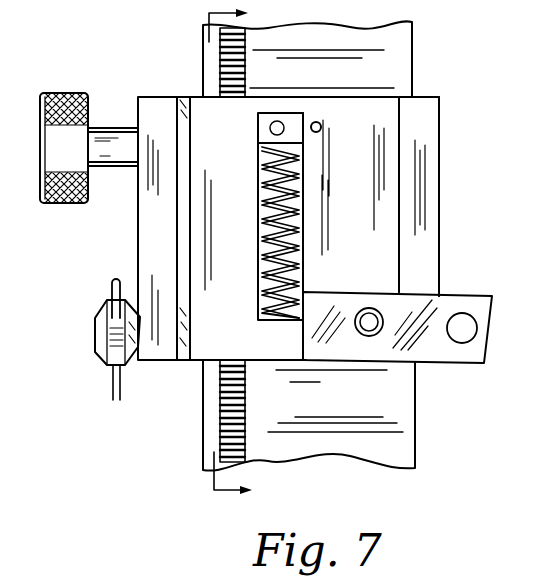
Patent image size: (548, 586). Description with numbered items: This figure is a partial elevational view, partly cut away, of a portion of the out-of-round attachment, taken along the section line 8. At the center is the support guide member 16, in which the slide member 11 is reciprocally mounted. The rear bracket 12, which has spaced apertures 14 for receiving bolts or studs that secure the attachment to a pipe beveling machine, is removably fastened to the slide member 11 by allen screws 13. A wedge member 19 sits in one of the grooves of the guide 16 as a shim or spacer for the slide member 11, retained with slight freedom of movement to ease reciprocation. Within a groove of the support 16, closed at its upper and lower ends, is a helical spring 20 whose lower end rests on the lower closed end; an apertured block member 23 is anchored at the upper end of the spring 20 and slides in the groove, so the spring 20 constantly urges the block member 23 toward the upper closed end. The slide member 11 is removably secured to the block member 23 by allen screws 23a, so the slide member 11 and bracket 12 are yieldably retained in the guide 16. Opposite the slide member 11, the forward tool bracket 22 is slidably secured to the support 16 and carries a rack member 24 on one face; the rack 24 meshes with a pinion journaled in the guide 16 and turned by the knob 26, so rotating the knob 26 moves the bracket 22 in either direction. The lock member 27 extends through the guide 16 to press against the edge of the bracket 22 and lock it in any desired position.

The section line 8- 8 is at (218, 251).
The slide member 11 is at (392, 148).
The rear bracket 12 is at (436, 305).
The allen screws 13 is at (368, 309).
The apertures 14 is at (459, 340).
The support guide member 16 is at (428, 208).
The wedge member 19 is at (187, 352).
The helical spring 20 is at (262, 172).
The tool bracket 22 is at (405, 35).
The apertured block member 23 is at (288, 118).
The allen screws 23a is at (322, 124).
The rack member 24 is at (221, 60).
The knob 26 is at (52, 148).
The lock member 27 is at (102, 337).